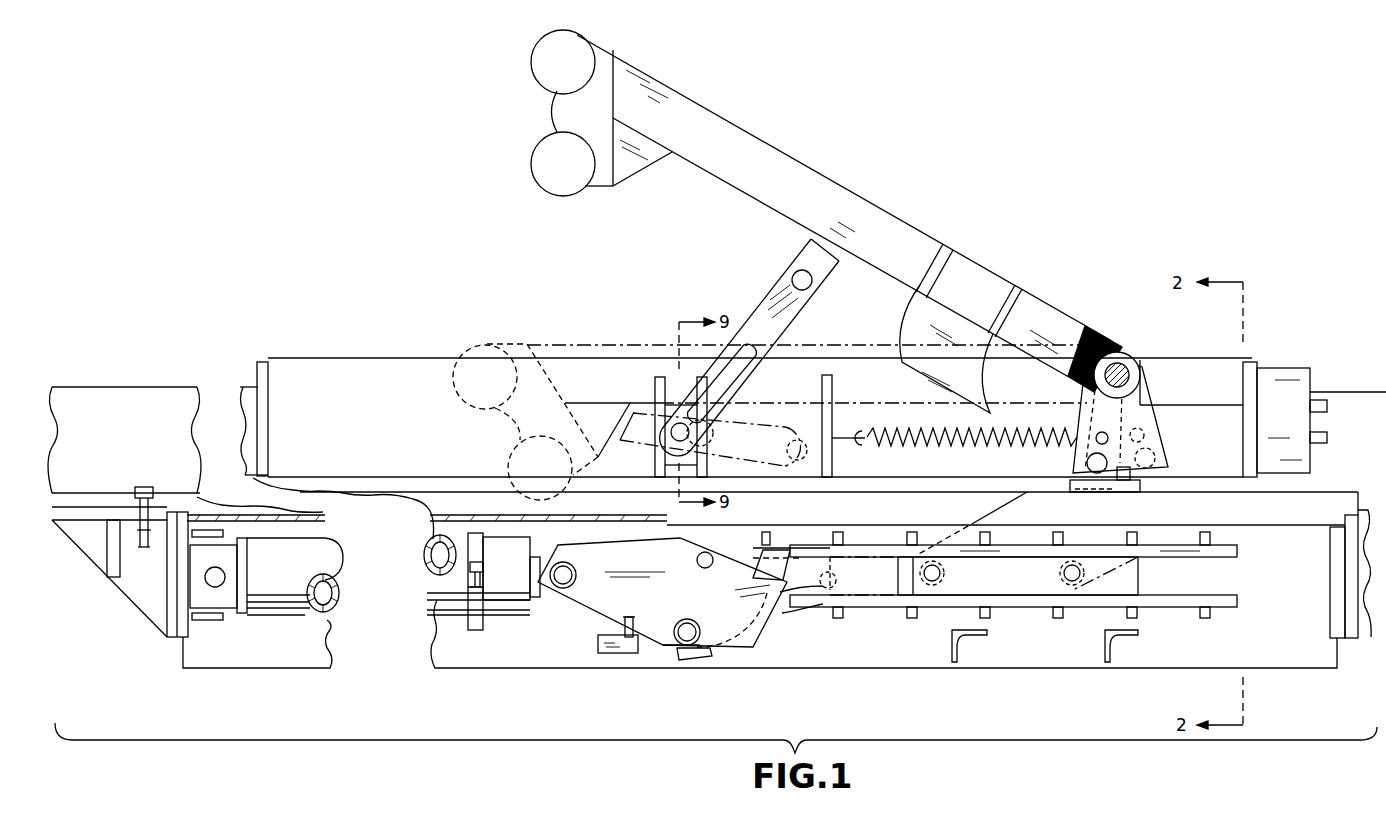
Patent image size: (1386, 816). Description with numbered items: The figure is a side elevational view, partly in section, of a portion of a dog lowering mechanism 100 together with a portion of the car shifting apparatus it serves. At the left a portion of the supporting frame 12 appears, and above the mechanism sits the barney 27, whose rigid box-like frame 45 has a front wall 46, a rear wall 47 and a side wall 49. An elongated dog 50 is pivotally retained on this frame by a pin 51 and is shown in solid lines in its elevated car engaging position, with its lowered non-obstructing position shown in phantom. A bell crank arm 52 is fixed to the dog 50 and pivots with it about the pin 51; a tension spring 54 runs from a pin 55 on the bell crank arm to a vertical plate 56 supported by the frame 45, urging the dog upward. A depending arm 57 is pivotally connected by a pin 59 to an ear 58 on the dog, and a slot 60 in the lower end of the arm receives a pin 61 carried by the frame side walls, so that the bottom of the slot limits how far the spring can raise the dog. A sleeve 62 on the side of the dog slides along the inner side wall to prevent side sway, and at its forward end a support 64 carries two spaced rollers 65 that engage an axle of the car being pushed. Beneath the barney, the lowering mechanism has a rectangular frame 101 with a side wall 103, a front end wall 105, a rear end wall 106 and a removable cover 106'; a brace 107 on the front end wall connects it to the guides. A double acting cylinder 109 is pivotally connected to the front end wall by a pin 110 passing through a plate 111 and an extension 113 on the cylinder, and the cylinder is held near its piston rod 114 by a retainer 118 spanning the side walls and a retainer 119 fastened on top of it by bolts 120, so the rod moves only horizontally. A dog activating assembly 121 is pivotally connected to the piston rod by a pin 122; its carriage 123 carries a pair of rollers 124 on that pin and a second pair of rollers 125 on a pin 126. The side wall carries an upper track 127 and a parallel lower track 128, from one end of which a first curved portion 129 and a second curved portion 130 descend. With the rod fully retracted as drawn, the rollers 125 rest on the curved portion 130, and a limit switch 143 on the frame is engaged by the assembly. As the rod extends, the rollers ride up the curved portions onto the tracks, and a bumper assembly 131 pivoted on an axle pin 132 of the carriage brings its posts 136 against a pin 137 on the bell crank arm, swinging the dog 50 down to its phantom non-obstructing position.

The supporting frame 12 is at (139, 384).
The barney 27 is at (419, 352).
The box-like frame 45 is at (255, 453).
The front wall 46 is at (261, 360).
The rear wall 47 is at (1259, 385).
The side wall 49 is at (1240, 479).
The dog 50 is at (838, 183).
The pin 51 is at (1124, 369).
The bell crank arm 52 is at (1123, 405).
The tension spring 54 is at (965, 430).
The pin 55 is at (1108, 438).
The vertical plate 56 is at (828, 388).
The depending arm 57 is at (778, 300).
The ear 58 is at (809, 238).
The pin 59 is at (800, 278).
The slot 60 is at (732, 366).
The pin 61 is at (672, 442).
The sleeve 62 is at (927, 310).
The support 64 is at (558, 112).
The roller 65 is at (546, 47).
The dog lowering mechanism 100 is at (926, 679).
The frame 101 is at (1162, 674).
The side wall 103 is at (1165, 521).
The front end wall 105 is at (188, 638).
The rear end wall 106 is at (1318, 574).
The removable cover 106' is at (548, 507).
The brace 107 is at (125, 598).
The double acting cylinder 109 is at (284, 616).
The pin 110 is at (216, 584).
The plate 111 is at (226, 567).
The extension 113 is at (237, 522).
The piston rod 114 is at (541, 550).
The retainer 118 is at (478, 630).
The retainer 119 is at (478, 548).
The bolt 120 is at (435, 577).
The dog activating assembly 121 is at (590, 609).
The pin 122 is at (568, 579).
The carriage 123 is at (655, 652).
The roller 124 is at (568, 571).
The roller 125 is at (687, 622).
The pin 126 is at (694, 624).
The upper track 127 is at (1223, 545).
The lower track 128 is at (1218, 608).
The first curved portion 129 is at (789, 611).
The second curved portion 130 is at (704, 662).
The bumper assembly 131 is at (726, 531).
The axle pin 132 is at (697, 559).
The post 136 is at (772, 558).
The pin 137 is at (1078, 460).
The limit switch 143 is at (622, 625).